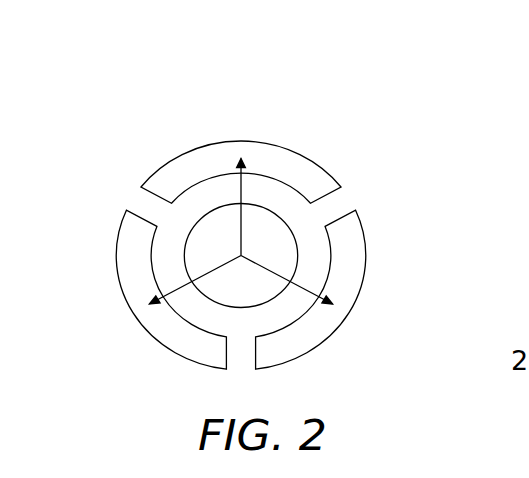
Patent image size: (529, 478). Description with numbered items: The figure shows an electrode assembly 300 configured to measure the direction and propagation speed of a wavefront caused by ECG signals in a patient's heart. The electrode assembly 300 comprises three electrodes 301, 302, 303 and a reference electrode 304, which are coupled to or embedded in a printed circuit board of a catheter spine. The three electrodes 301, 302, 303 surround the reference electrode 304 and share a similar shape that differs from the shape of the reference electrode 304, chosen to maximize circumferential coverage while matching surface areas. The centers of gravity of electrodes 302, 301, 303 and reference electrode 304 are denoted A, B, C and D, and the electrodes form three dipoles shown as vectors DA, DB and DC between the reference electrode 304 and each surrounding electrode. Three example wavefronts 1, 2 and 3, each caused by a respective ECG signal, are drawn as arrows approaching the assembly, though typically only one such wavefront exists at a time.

The electrode assembly 300 is at (373, 88).
The electrode 301 is at (195, 168).
The electrode 302 is at (140, 238).
The electrode 303 is at (337, 268).
The reference electrode 304 is at (272, 238).
The wavefront 1 is at (239, 120).
The wavefront 2 is at (113, 185).
The wavefront 3 is at (380, 258).